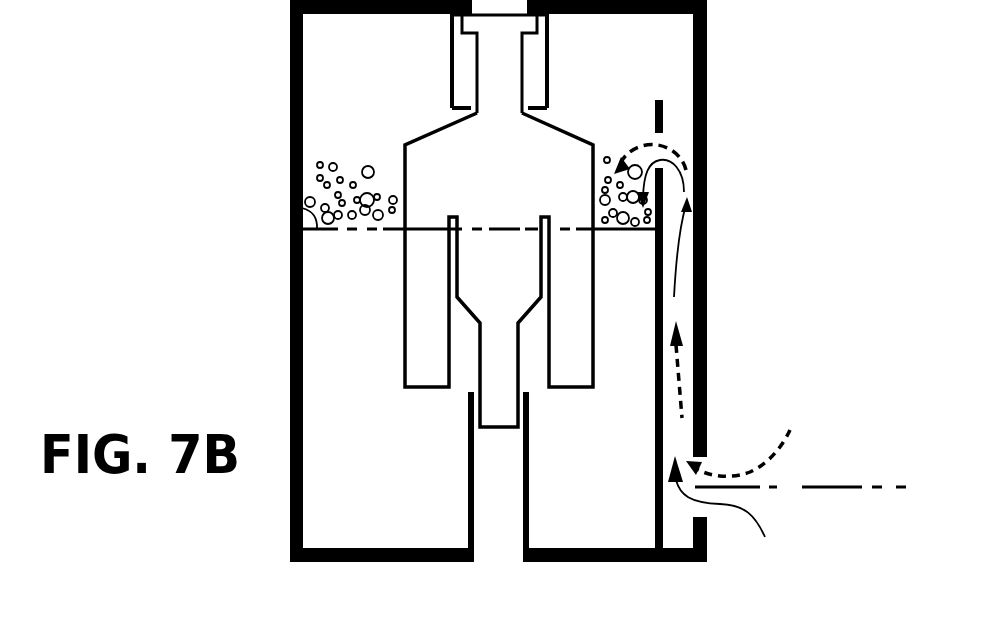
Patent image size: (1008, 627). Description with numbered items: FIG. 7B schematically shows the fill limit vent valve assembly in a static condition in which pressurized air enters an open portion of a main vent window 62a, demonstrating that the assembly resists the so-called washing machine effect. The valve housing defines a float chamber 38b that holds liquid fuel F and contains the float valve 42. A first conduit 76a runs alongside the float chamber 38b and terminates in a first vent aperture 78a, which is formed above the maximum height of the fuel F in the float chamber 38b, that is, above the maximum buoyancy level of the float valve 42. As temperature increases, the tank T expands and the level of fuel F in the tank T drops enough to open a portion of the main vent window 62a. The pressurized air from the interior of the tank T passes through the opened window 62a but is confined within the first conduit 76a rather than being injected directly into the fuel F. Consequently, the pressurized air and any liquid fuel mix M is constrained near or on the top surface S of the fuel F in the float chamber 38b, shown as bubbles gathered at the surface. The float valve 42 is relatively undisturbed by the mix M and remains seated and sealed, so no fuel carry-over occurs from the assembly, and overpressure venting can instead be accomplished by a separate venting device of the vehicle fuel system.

The float valve 42 is at (578, 129).
The first vent aperture 78a is at (684, 191).
The first conduit 76a is at (706, 308).
The main vent window 62a is at (697, 511).
The float chamber 38b is at (318, 333).
The top surface of the fuel S is at (290, 207).
The liquid fuel mix M is at (352, 205).
The tank T is at (379, 78).
The fuel F is at (831, 534).